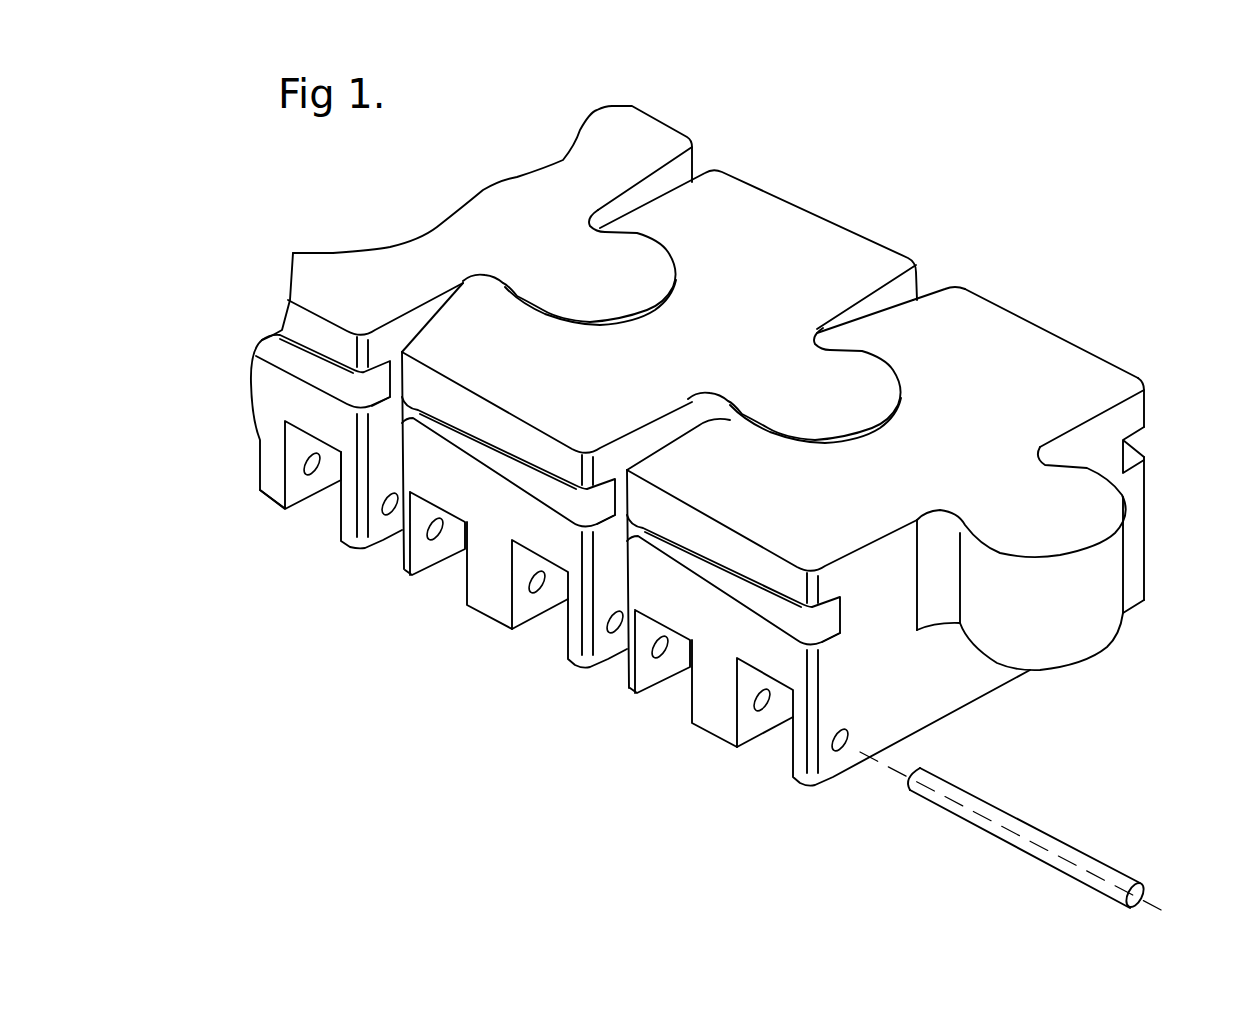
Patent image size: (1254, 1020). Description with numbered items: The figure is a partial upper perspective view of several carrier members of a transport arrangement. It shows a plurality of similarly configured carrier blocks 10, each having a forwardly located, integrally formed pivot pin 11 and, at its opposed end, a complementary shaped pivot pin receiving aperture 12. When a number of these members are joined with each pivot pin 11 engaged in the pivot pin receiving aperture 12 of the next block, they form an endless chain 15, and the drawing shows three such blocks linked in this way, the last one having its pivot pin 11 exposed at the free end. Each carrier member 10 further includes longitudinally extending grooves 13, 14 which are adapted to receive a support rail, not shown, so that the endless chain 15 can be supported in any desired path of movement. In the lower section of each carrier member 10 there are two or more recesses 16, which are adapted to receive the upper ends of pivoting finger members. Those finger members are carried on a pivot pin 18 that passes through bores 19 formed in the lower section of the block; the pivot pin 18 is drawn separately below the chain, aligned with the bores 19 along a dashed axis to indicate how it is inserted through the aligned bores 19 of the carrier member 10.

The carrier block 10 is at (590, 152).
The pivot pin 11 is at (648, 272).
The pivot pin receiving aperture 12 is at (652, 237).
The longitudinally extending groove 13 is at (316, 373).
The longitudinally extending groove 14 is at (1128, 442).
The endless chain 15 is at (1100, 334).
The recess 16 is at (447, 570).
The pivot pin 18 is at (1014, 826).
The bore 19 is at (300, 462).